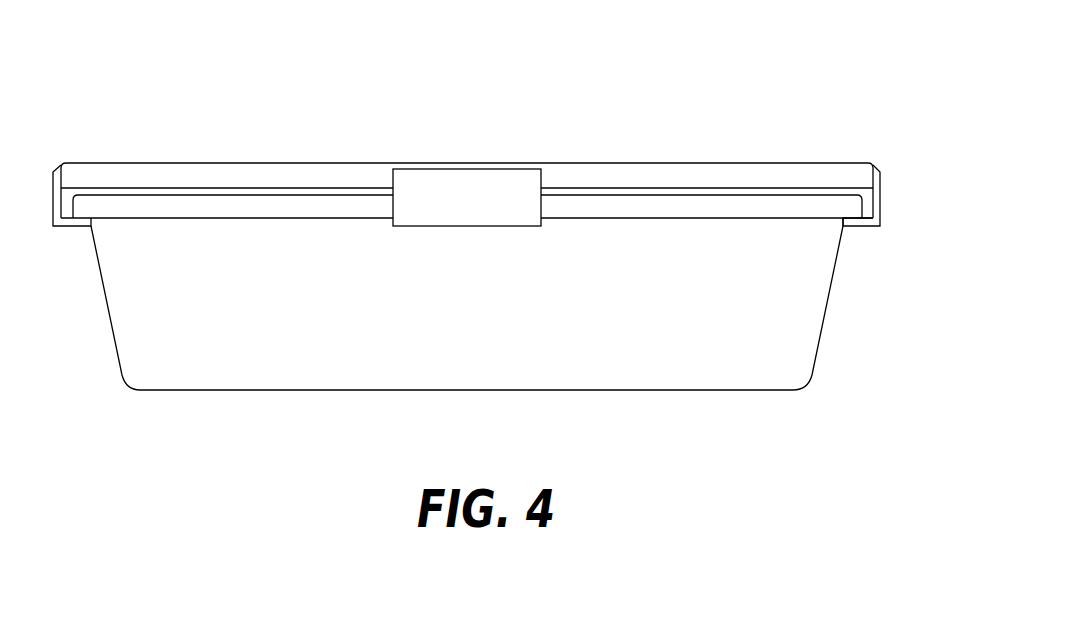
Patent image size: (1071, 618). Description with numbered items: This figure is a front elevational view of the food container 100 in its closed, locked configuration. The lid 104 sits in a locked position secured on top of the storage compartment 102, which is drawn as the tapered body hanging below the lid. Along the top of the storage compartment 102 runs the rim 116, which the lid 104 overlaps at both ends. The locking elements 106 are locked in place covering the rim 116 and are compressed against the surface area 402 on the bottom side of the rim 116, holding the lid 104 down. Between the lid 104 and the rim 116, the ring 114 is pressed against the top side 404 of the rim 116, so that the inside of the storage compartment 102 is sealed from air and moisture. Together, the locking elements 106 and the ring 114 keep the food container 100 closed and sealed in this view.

The food container 100 is at (855, 63).
The storage compartment 102 is at (723, 335).
The lid 104 is at (712, 177).
The locking elements 106 is at (452, 205).
The ring 114 is at (619, 192).
The rim 116 is at (108, 203).
The surface area 402 is at (839, 220).
The top side 404 is at (858, 195).